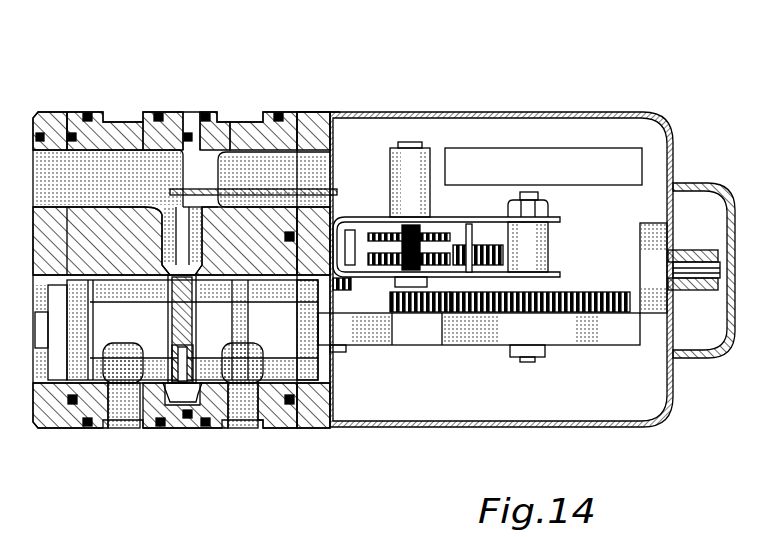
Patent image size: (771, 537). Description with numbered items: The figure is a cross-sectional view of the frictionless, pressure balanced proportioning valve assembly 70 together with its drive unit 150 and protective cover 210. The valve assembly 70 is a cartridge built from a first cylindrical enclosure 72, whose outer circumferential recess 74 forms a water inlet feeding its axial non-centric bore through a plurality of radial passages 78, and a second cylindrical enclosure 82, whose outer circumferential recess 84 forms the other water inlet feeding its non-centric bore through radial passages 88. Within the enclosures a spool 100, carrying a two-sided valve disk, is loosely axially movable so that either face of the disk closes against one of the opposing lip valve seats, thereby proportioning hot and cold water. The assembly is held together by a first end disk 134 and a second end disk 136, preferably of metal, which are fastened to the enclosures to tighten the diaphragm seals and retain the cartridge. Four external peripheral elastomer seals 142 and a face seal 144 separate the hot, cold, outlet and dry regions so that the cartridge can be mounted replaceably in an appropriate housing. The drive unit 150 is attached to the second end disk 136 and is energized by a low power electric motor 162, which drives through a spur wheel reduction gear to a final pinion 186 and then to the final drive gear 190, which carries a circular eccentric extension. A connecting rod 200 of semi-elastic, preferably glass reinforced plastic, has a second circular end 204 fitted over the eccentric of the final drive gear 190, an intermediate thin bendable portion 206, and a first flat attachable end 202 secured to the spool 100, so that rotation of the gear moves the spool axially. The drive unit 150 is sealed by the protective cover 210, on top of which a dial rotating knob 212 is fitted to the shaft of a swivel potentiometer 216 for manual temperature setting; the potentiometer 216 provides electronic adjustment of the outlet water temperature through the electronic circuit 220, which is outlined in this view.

The frictionless pressure balanced proportioning valve assembly 70 is at (196, 52).
The first cylindrical enclosure 72 is at (72, 112).
The outer circumferential recess 74 is at (118, 120).
The radial passages 78 is at (128, 403).
The second cylindrical enclosure 82 is at (293, 120).
The outer circumferential recess 84 is at (238, 120).
The radial passages 88 is at (238, 410).
The spool 100 is at (181, 384).
The first end disk 134 is at (45, 426).
The second end disk 136 is at (317, 115).
The peripheral elastomer seals 142 is at (205, 112).
The face elastomer seal 144 is at (34, 137).
The drive unit 150 is at (484, 82).
The electric motor 162 is at (415, 146).
The final pinion 186 is at (390, 300).
The final drive gear 190 is at (575, 292).
The connecting rod 200 is at (413, 376).
The first flat attachable end 202 is at (325, 346).
The second circular end 204 is at (570, 346).
The intermediate thin bendable portion 206 is at (428, 346).
The protective cover 210 is at (575, 112).
The dial rotating knob 212 is at (684, 183).
The swivel potentiometer 216 is at (656, 314).
The electronic circuit 220 is at (543, 166).